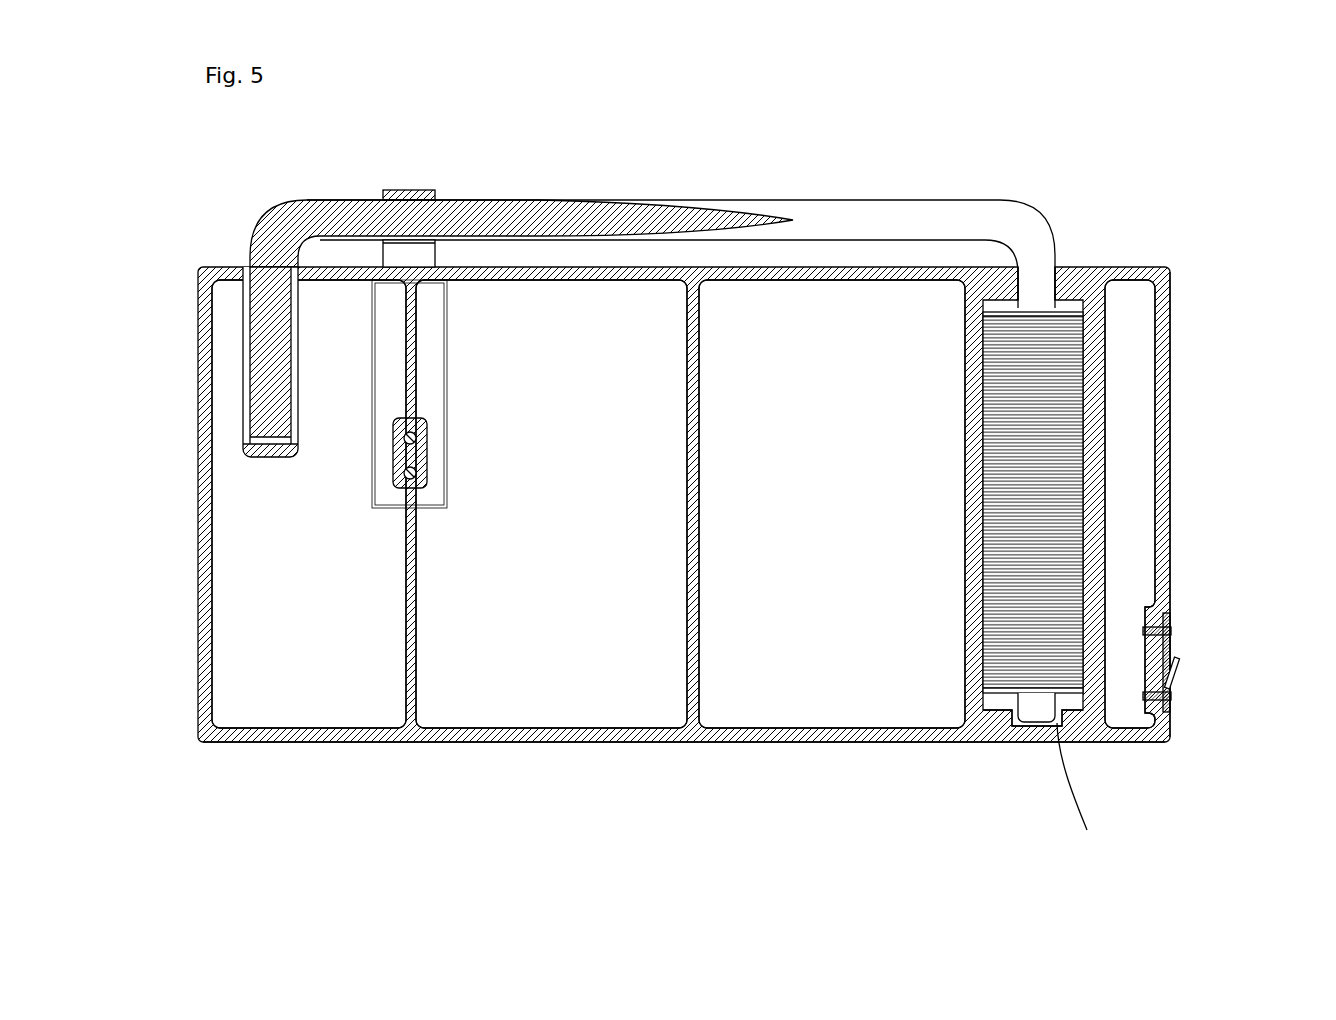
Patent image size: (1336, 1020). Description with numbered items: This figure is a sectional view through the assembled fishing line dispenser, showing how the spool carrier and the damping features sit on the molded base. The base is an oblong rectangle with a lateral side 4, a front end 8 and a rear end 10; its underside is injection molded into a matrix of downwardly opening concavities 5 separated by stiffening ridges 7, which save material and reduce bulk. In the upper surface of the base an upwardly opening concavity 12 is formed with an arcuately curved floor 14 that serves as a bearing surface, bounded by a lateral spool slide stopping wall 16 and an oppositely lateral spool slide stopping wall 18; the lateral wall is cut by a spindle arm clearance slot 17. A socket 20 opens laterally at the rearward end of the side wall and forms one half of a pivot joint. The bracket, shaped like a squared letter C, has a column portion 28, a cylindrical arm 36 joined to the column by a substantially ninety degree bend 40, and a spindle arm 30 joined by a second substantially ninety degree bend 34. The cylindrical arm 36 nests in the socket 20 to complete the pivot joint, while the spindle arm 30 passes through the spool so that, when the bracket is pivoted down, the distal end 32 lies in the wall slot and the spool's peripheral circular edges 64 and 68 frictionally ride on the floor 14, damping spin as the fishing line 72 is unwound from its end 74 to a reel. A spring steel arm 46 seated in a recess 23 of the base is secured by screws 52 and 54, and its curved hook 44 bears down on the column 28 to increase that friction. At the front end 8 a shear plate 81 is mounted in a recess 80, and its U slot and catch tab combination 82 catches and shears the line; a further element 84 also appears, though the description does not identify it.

The lateral side 4 is at (878, 278).
The downwardly opening concavities 5 is at (303, 690).
The stiffening ridges 7 is at (412, 653).
The front end 8 is at (1163, 522).
The rear end 10 is at (635, 483).
The upwardly opening concavity 12 is at (997, 703).
The floor 14 is at (972, 417).
The lateral spool slide stopping wall 16 is at (1005, 302).
The lateral spindle arm clearance slot 17 is at (1015, 280).
The oppositely lateral spool slide stopping wall 18 is at (1070, 707).
The socket 20 is at (257, 457).
The recess 23 is at (387, 497).
The column portion 28 is at (812, 215).
The spindle arm 30 is at (1050, 240).
The distal end 32 is at (1028, 722).
The second substantially 90° bend 34 is at (1035, 283).
The cylindrical arm 36 is at (267, 395).
The substantially 90° bend 40 is at (277, 230).
The curved hook 44 is at (405, 188).
The spring steel arm 46 is at (433, 250).
The screw 52 is at (417, 473).
The screw 54 is at (412, 438).
The peripheral circular edge 64 is at (1068, 312).
The peripheral circular edge 68 is at (1003, 690).
The fishing line 72 is at (1055, 462).
The end of fishing line 74 is at (1172, 580).
The recess 80 is at (1157, 662).
The fishing line shear plate 81 is at (1172, 643).
The U slot and catch tab combination 82 is at (1180, 667).
The clamp 84 is at (1170, 697).